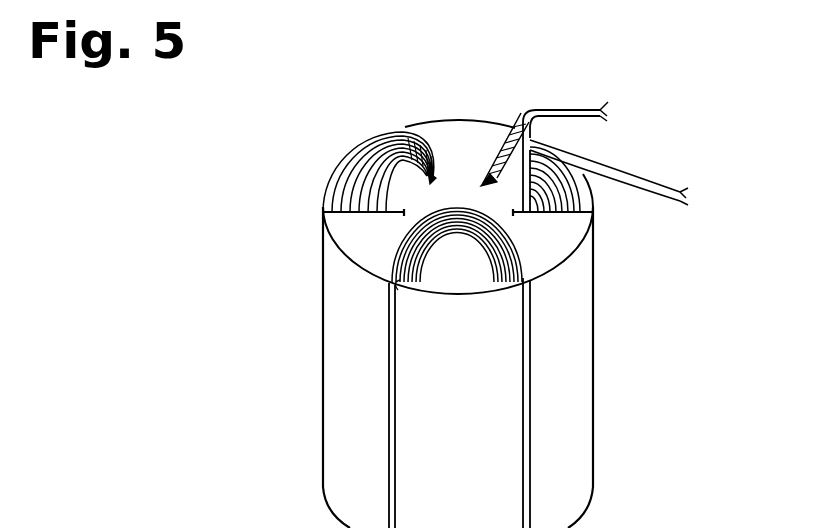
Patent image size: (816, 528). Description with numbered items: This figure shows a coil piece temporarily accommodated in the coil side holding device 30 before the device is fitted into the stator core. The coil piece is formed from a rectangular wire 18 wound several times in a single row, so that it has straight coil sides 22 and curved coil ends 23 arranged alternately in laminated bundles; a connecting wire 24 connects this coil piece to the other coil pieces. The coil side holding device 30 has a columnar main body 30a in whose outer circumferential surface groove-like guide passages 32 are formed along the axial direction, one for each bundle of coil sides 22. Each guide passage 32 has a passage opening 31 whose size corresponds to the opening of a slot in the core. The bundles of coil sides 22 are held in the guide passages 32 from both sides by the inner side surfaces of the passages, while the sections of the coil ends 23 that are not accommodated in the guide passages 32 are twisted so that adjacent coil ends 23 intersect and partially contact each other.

The rectangular wire 18 is at (363, 151).
The coil sides 22 is at (550, 213).
The coil ends 23 is at (458, 202).
The connecting wire 24 is at (597, 122).
The coil side holding device 30 is at (504, 324).
The columnar main body 30a is at (585, 370).
The passage opening 31 is at (523, 387).
The guide passages 32 is at (528, 342).